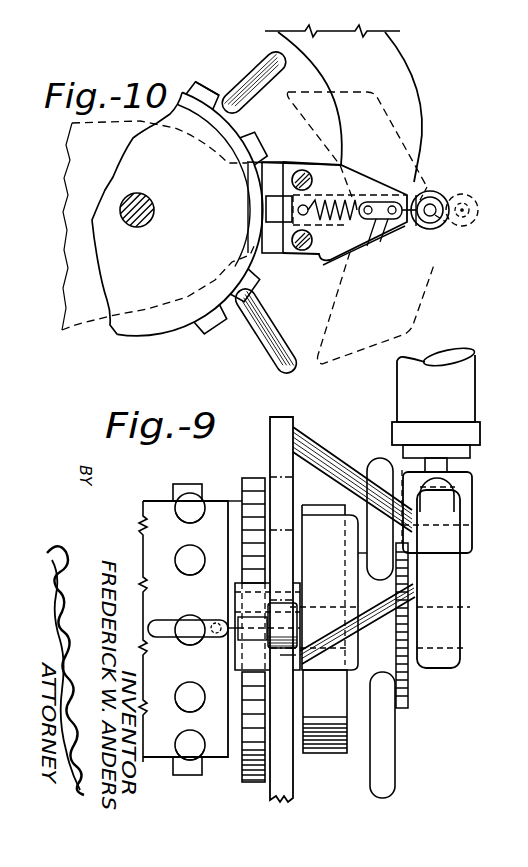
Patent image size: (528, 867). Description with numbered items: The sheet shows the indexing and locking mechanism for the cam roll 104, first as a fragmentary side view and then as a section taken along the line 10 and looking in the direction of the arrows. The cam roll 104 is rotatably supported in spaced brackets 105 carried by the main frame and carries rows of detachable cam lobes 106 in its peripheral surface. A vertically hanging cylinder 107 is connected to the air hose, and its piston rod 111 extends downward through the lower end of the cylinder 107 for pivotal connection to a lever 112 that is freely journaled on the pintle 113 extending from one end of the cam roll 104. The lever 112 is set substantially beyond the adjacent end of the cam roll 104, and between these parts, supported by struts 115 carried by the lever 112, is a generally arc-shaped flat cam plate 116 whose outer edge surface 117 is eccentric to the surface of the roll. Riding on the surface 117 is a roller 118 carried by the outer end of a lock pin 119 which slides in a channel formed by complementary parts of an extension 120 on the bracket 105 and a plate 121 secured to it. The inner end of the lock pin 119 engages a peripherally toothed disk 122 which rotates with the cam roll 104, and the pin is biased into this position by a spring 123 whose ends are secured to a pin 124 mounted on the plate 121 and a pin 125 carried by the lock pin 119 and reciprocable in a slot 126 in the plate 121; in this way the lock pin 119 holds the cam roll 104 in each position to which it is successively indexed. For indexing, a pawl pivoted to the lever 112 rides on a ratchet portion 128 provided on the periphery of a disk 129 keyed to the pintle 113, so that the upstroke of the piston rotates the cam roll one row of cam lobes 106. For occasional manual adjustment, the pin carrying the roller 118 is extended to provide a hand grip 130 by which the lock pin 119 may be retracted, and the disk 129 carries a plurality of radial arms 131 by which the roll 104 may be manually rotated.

In FIG. 9, the section line 10 is at (208, 458).
In FIG. 9, the cam roll 104 is at (183, 629).
In FIG. 10, the bracket 105 is at (80, 331).
In FIG. 9, the cam lobe 106 is at (198, 692).
In FIG. 9, the cylinder 107 is at (436, 401).
In FIG. 9, the piston rod 111 is at (452, 462).
In FIG. 9, the lever 112 is at (455, 495).
In FIG. 10, the pintle 113 is at (156, 207).
In FIG. 9, the pintle 113 is at (468, 614).
In FIG. 9, the strut 115 is at (333, 452).
In FIG. 10, the cam plate 116 is at (393, 64).
In FIG. 9, the cam plate 116 is at (283, 418).
In FIG. 10, the outer edge surface 117 is at (420, 120).
In FIG. 10, the roller 118 is at (433, 197).
In FIG. 9, the roller 118 is at (283, 656).
In FIG. 10, the lock pin 119 is at (432, 231).
In FIG. 10, the extension 120 is at (250, 250).
In FIG. 10, the plate 121 is at (296, 260).
In FIG. 10, the toothed disk 122 is at (216, 68).
In FIG. 9, the toothed disk 122 is at (257, 468).
In FIG. 10, the spring 123 is at (323, 224).
In FIG. 10, the pin 124 is at (318, 180).
In FIG. 10, the pin 125 is at (360, 248).
In FIG. 10, the slot 126 is at (383, 232).
In FIG. 9, the ratchet portion 128 is at (409, 676).
In FIG. 9, the disk 129 is at (365, 694).
In FIG. 10, the hand grip 130 is at (456, 225).
In FIG. 9, the hand grip 130 is at (214, 622).
In FIG. 10, the radial arm 131 is at (268, 73).
In FIG. 9, the radial arm 131 is at (392, 737).